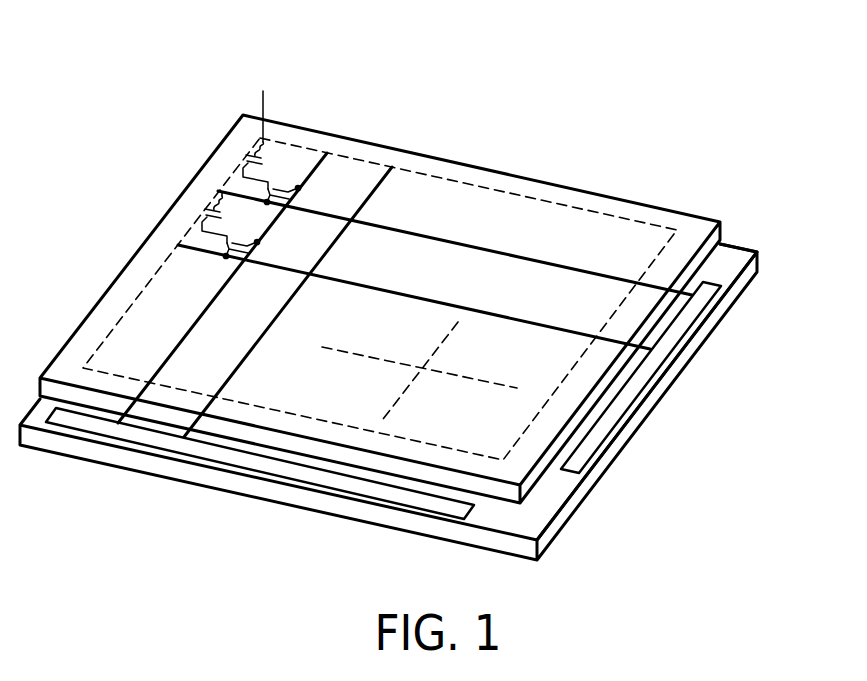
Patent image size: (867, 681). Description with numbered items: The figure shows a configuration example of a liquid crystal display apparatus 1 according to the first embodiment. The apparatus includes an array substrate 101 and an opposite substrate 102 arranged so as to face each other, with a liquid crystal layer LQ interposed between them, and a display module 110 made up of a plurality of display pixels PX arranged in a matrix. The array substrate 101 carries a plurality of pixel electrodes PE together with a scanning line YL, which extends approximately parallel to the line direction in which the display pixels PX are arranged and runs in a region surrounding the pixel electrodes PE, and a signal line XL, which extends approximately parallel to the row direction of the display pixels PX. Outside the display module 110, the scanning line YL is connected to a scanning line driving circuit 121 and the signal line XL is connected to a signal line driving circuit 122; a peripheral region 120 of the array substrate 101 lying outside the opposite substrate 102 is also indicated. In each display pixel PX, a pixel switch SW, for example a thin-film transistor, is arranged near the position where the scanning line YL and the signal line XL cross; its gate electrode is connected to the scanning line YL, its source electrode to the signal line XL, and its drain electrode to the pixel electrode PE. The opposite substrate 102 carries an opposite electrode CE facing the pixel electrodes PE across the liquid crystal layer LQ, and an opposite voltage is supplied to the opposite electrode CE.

The liquid crystal display apparatus 1 is at (146, 107).
The array substrate 101 is at (743, 241).
The opposite substrate 102 is at (646, 199).
The display module 110 is at (467, 212).
The peripheral area 120 is at (735, 262).
The scanning line driving circuit 121 is at (643, 373).
The signal line driving circuit 122 is at (265, 463).
The display pixel PX is at (220, 194).
The pixel switch SW is at (292, 197).
The pixel electrode PE is at (206, 216).
The opposite electrode CE is at (216, 198).
The liquid crystal layer LQ is at (212, 208).
The signal line XL is at (260, 337).
The scanning line YL is at (502, 255).